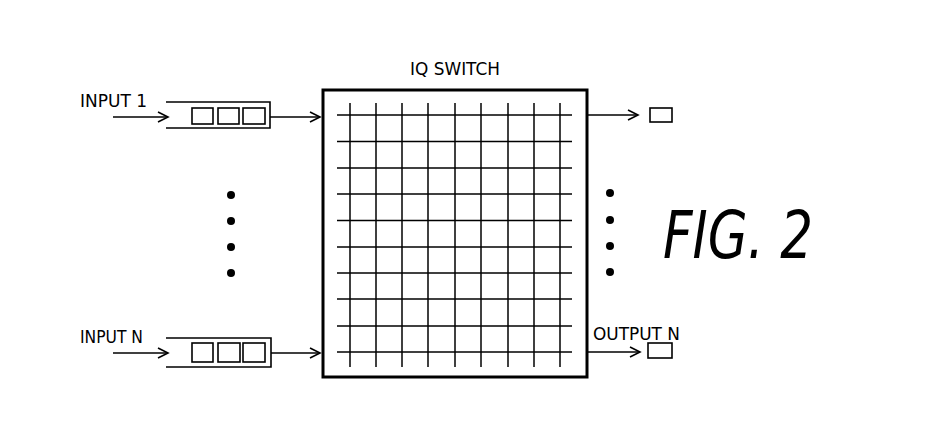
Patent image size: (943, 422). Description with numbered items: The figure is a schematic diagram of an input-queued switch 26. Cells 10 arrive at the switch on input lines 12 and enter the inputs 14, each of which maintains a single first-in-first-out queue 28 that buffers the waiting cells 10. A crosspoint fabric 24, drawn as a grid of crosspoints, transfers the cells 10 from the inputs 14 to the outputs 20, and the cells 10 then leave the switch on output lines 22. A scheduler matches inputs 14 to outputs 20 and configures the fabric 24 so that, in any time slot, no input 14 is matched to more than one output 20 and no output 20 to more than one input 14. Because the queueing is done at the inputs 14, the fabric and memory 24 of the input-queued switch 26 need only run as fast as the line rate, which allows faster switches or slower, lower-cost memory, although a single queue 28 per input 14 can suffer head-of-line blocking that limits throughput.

The cell 10 is at (198, 135).
The input line 12 is at (116, 137).
The input 14 is at (205, 74).
The output 20 is at (703, 77).
The output line 22 is at (633, 136).
The crosspoint fabric 24 is at (455, 256).
The input-queued switch 26 is at (657, 56).
The first-in-first-out queue 28 is at (214, 149).